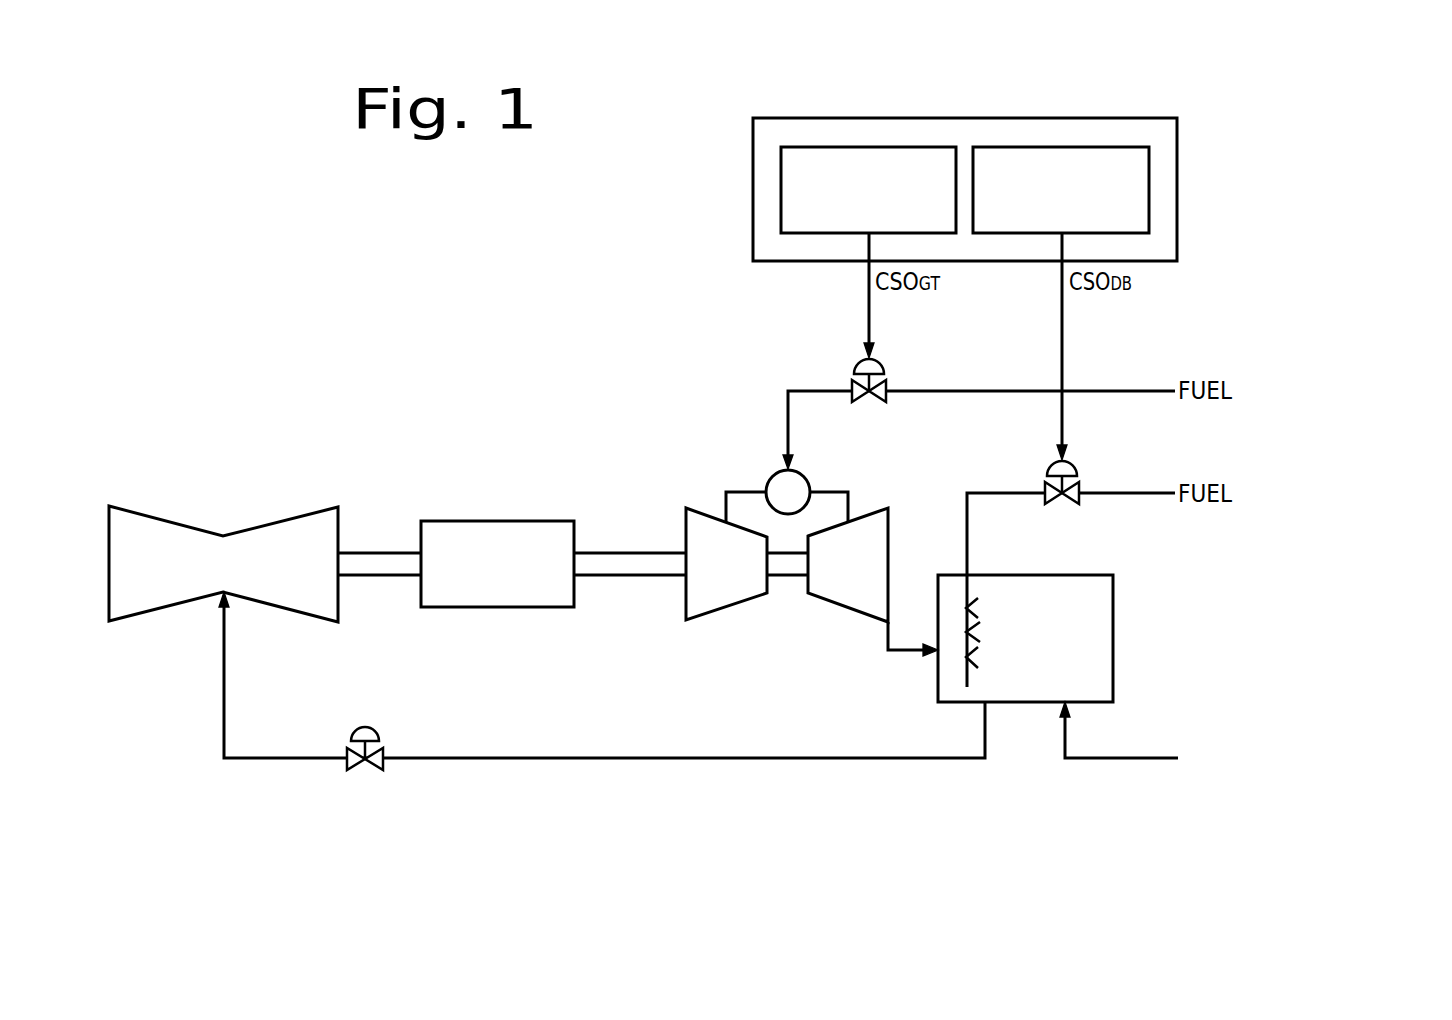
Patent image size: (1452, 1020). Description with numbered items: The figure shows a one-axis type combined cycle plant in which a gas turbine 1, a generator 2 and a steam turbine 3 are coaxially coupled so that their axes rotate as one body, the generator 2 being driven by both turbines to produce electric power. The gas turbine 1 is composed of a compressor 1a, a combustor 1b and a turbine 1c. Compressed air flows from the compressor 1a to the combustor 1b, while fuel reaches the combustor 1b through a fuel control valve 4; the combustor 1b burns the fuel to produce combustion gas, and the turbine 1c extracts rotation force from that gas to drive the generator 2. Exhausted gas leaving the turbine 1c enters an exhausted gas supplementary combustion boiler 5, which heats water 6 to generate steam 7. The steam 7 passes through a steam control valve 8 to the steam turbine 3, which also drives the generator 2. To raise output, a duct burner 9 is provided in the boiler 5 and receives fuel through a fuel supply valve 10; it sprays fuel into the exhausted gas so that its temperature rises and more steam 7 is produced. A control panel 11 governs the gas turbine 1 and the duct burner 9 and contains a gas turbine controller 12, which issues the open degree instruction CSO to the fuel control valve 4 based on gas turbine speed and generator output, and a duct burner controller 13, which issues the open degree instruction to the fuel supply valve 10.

The gas turbine 1 is at (797, 553).
The compressor 1a is at (703, 510).
The combustor 1b is at (772, 474).
The turbine 1c is at (873, 508).
The generator 2 is at (500, 521).
The steam turbine 3 is at (168, 521).
The fuel control valve 4 is at (881, 360).
The exhausted gas supplementary combustion boiler 5 is at (1113, 630).
The water 6 is at (1122, 760).
The steam 7 is at (687, 760).
The steam control valve 8 is at (369, 727).
The duct burner 9 is at (976, 608).
The fuel supply valve 10 is at (1073, 461).
The control panel 11 is at (857, 117).
The gas turbine controller 12 is at (781, 191).
The duct burner controller 13 is at (1149, 191).